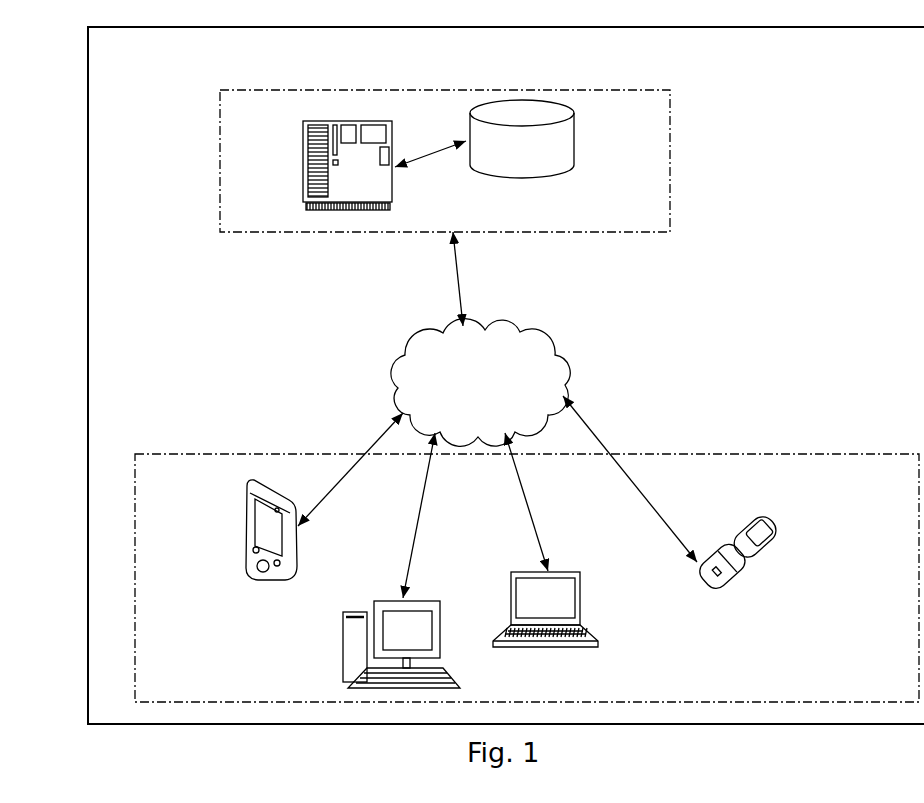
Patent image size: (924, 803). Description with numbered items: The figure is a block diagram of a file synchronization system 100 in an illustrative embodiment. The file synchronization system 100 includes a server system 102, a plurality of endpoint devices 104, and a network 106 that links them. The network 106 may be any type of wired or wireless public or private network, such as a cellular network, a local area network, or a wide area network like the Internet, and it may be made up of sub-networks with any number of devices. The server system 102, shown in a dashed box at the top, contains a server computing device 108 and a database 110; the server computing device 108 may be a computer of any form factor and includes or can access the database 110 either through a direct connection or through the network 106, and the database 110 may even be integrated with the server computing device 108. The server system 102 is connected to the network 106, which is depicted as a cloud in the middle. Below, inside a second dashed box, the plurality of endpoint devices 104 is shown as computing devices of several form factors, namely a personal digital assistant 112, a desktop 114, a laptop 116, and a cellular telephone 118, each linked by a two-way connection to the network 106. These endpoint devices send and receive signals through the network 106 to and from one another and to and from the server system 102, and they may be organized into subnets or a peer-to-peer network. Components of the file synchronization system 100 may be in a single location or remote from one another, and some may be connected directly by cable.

The file synchronization system 100 is at (155, 73).
The server system 102 is at (625, 220).
The plurality of endpoint devices 104 is at (895, 495).
The network 106 is at (461, 396).
The server computing device 108 is at (393, 201).
The database 110 is at (506, 173).
The personal digital assistant 112 is at (246, 511).
The desktop 114 is at (343, 645).
The laptop 116 is at (582, 598).
The cellular telephone 118 is at (762, 557).